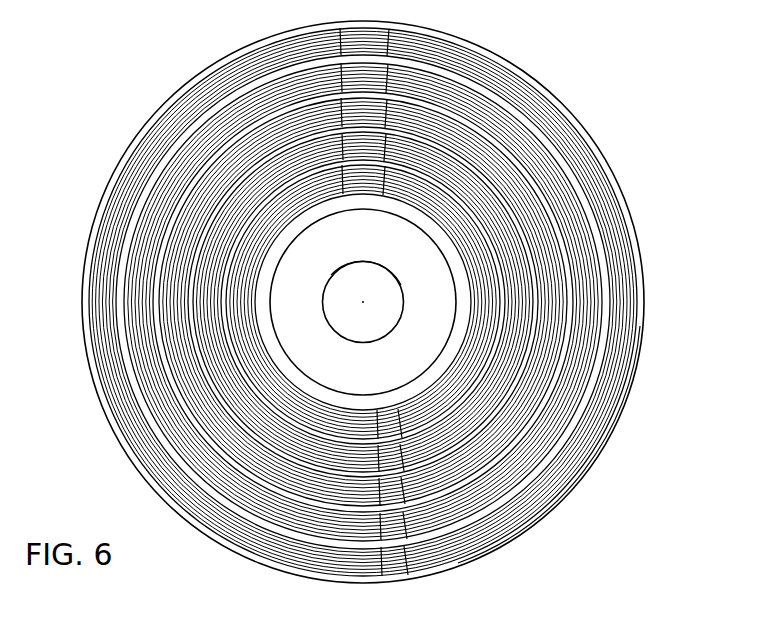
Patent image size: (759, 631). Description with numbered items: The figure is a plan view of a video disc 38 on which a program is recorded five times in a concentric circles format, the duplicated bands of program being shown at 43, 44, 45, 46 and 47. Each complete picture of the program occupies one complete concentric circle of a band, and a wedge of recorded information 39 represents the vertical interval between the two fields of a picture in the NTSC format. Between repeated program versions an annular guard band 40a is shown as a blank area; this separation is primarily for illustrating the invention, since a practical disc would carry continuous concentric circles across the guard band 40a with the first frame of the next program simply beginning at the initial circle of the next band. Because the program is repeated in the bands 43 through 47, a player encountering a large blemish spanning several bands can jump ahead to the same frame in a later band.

The video disc 38 is at (363, 291).
The wedge of recorded information representing the vertical interval 39 is at (330, 78).
The annular guard band 40a is at (498, 103).
The duplicated band of program 43 is at (468, 227).
The duplicated band of program 44 is at (508, 242).
The duplicated band of program 45 is at (553, 257).
The duplicated band of program 46 is at (588, 287).
The duplicated band of program 47 is at (622, 323).